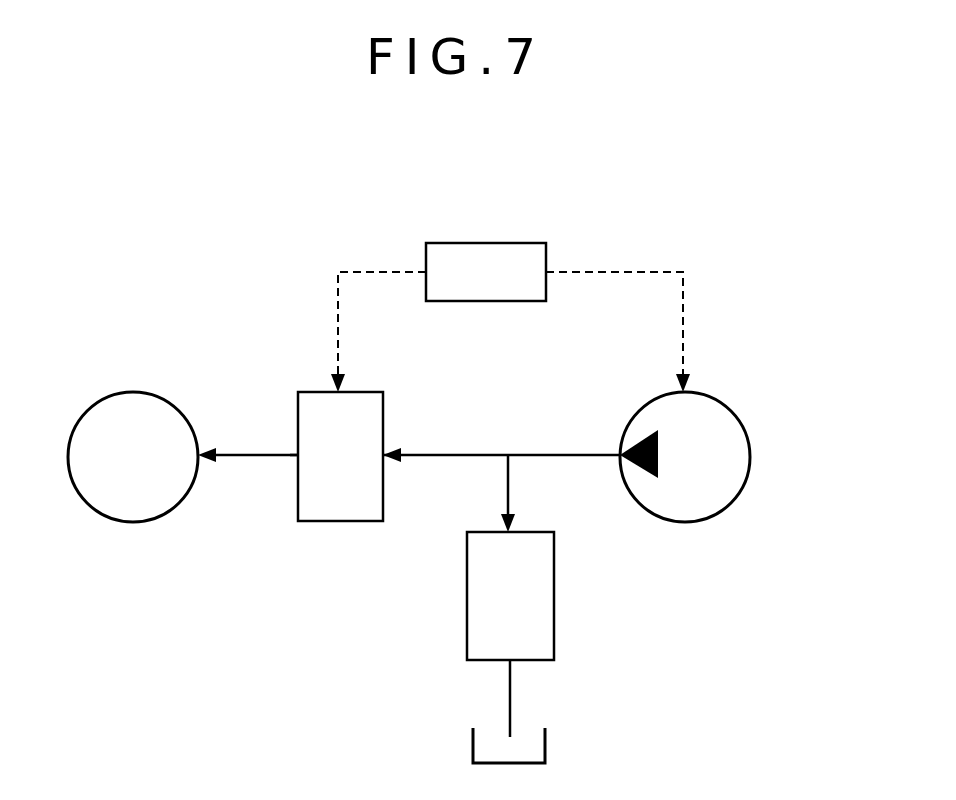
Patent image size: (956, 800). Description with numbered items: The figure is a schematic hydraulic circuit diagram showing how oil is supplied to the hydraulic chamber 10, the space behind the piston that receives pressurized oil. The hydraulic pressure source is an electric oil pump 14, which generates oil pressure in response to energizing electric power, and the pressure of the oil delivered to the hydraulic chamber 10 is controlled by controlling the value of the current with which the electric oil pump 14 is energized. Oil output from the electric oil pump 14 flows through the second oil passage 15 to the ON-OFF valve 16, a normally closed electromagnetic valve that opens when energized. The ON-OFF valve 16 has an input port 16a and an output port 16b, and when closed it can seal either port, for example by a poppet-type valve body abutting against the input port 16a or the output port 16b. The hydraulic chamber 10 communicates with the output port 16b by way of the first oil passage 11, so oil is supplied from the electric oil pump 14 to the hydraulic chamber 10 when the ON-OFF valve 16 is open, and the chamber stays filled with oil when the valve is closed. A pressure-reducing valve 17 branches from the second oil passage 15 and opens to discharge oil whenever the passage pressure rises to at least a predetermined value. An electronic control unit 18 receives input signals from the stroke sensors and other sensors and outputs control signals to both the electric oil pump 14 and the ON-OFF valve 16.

The hydraulic chamber 10 is at (135, 522).
The first oil passage 11 is at (253, 452).
The electric oil pump 14 is at (750, 458).
The second oil passage 15 is at (565, 452).
The ON-OFF valve 16 is at (335, 521).
The input port 16a is at (386, 458).
The output port 16b is at (298, 465).
The pressure-reducing valve 17 is at (554, 598).
The electronic control unit 18 is at (486, 243).